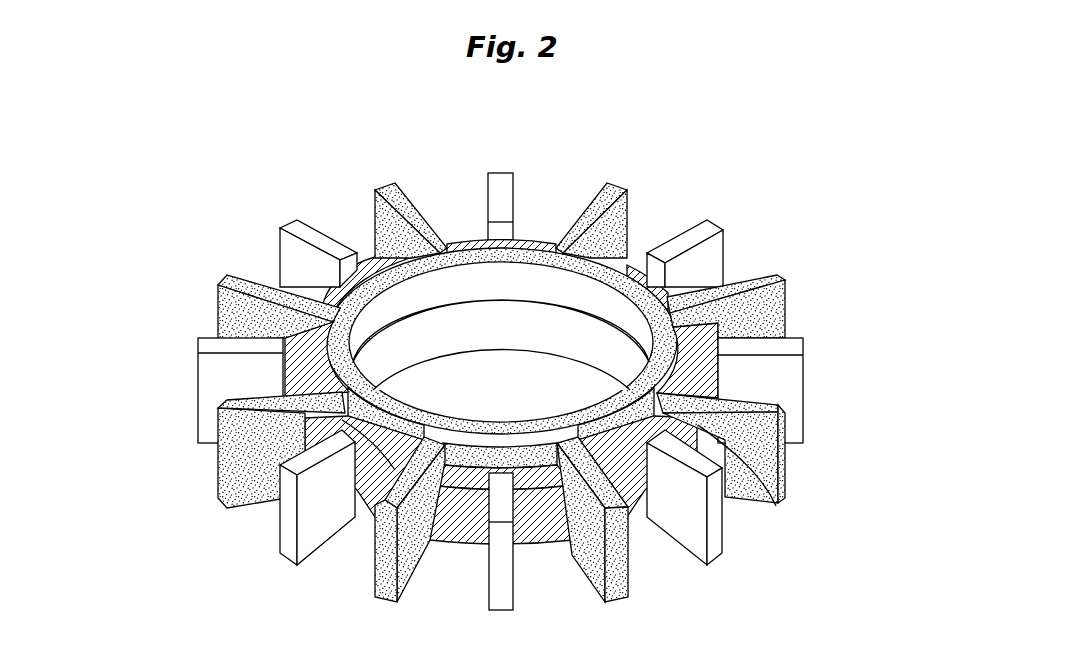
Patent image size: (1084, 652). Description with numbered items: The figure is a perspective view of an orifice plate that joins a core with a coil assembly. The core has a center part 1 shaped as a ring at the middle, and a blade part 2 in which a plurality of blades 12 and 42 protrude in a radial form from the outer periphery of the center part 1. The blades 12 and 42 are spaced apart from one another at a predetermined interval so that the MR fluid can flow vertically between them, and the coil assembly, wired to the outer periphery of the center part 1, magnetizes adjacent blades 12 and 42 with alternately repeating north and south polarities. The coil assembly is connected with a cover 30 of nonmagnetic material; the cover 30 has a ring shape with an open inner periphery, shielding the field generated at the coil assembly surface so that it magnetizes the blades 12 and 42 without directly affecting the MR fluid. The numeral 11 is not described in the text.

The center part 1 is at (606, 257).
The blade part 2 is at (774, 261).
The yoke ring 11 is at (447, 256).
The blade 12 is at (232, 318).
The cover 30 is at (777, 508).
The blade 42 is at (212, 386).